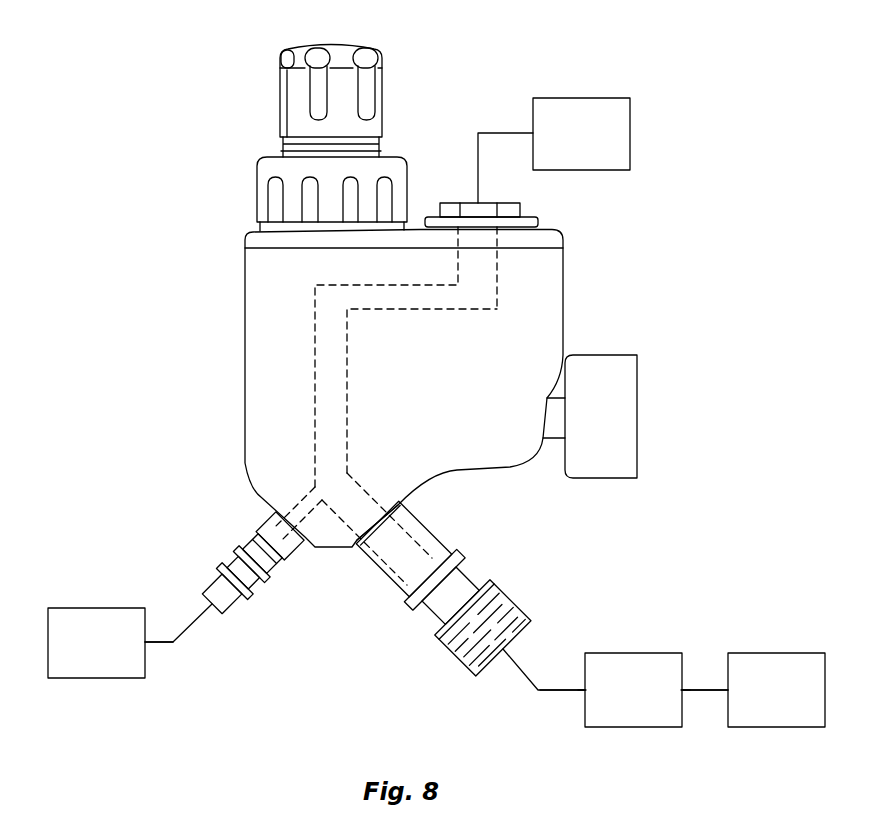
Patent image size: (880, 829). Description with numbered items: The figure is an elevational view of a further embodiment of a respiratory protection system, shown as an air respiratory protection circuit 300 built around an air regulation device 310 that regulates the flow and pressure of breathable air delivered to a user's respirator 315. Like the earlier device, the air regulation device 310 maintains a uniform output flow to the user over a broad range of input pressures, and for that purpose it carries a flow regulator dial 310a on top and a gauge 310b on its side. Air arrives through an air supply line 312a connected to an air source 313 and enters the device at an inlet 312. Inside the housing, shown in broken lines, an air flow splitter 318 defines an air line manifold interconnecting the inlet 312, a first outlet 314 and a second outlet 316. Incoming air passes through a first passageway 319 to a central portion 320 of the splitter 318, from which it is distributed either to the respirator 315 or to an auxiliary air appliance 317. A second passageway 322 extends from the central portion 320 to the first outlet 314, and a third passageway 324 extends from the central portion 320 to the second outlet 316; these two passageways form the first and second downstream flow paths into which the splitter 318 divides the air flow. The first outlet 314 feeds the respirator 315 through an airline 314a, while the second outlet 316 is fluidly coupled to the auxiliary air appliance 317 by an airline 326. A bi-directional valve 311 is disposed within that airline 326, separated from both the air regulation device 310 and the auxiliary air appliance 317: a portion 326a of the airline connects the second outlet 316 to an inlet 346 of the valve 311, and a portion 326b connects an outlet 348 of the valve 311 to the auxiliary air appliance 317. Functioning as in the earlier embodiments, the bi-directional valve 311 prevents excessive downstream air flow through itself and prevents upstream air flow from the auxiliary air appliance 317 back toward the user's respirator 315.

The air respiratory protection circuit 300 is at (578, 50).
The air regulation device 310 is at (240, 279).
The flow regulator dial 310a is at (292, 110).
The gauge 310b is at (631, 415).
The bi-directional valve 311 is at (657, 704).
The inlet 312 is at (232, 603).
The air supply line 312a is at (162, 643).
The air source 313 is at (121, 656).
The first outlet 314 is at (450, 202).
The airline 314a is at (497, 131).
The respirator 315 is at (606, 148).
The second outlet 316 is at (522, 605).
The auxiliary air appliance 317 is at (801, 704).
The air flow splitter 318 is at (335, 372).
The first passageway 319 is at (232, 552).
The central portion 320 is at (349, 471).
The second passageway 322 is at (330, 432).
The third passageway 324 is at (430, 522).
The airline 326 is at (510, 683).
The airline portion 326a is at (558, 693).
The airline portion 326b is at (710, 693).
The valve inlet 346 is at (583, 689).
The valve outlet 348 is at (685, 689).